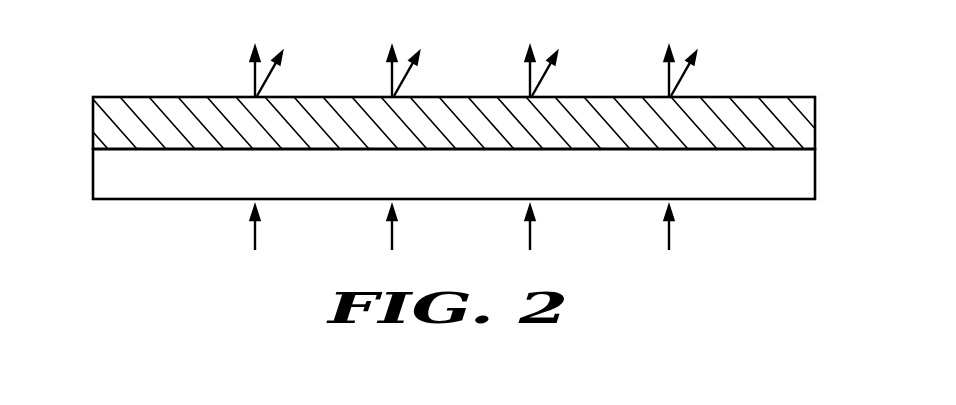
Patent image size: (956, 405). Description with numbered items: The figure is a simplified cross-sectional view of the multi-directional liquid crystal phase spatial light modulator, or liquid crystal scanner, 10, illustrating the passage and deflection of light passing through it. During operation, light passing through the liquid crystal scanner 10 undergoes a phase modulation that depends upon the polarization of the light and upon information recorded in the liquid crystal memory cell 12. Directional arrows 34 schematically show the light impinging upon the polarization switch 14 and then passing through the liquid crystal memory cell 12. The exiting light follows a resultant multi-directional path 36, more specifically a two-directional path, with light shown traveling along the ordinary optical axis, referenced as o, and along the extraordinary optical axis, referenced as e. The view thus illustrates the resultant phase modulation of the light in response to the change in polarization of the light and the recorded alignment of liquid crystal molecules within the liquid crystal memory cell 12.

The multi-directional liquid crystal phase spatial light modulator 10 is at (288, 307).
The liquid crystal memory cell 12 is at (815, 169).
The polarization switch 14 is at (815, 105).
The directional arrows 34 is at (256, 241).
The multi-directional path 36 is at (228, 52).